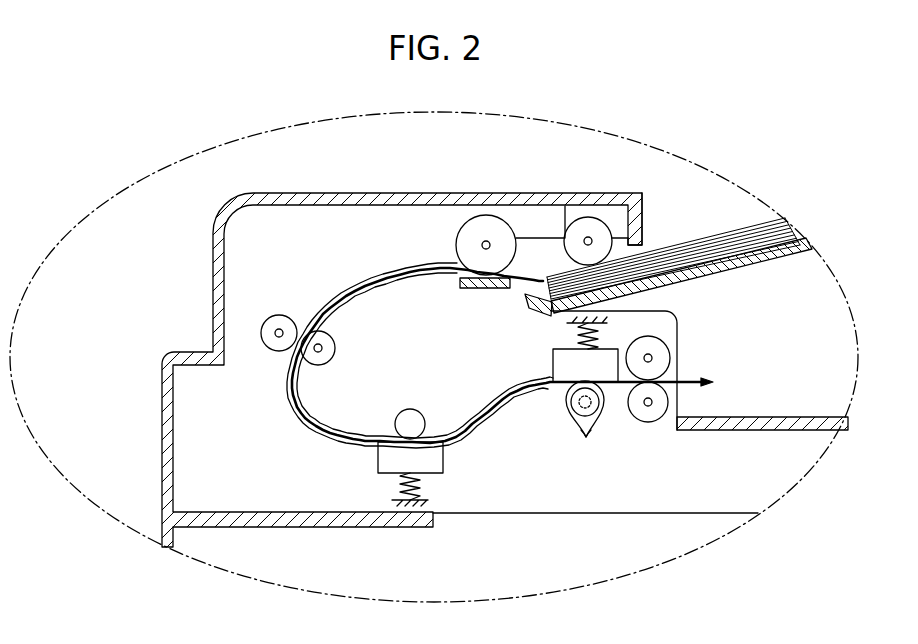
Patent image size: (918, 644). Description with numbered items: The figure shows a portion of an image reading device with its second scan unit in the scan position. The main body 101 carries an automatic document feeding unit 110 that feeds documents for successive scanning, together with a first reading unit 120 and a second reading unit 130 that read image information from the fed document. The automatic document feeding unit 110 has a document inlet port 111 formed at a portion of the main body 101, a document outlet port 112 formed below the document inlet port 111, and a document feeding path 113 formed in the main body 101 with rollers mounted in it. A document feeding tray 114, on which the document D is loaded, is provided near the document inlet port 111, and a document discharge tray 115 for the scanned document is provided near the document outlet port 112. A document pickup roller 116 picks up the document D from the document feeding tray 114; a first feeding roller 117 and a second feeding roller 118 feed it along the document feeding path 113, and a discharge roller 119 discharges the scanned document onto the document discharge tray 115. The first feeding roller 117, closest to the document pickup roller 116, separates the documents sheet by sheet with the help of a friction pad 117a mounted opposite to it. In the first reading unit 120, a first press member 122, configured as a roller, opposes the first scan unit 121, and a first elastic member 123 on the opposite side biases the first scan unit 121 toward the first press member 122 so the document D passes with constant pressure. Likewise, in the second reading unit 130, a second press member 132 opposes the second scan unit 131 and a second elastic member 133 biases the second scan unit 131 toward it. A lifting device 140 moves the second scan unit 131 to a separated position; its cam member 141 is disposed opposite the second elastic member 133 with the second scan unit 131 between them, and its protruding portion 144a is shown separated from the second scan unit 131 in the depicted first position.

The main body 101 is at (165, 415).
The automatic document feeding unit 110 is at (393, 248).
The document inlet port 111 is at (628, 251).
The document outlet port 112 is at (677, 389).
The document feeding path 113 is at (315, 421).
The document feeding tray 114 is at (763, 257).
The document discharge tray 115 is at (798, 416).
The document pickup roller 116 is at (588, 216).
The first feeding roller 117 is at (486, 214).
The friction pad 117a is at (473, 290).
The second feeding roller 118 is at (279, 316).
The discharge roller 119 is at (663, 350).
The first reading unit 120 is at (435, 437).
The first scan unit 121 is at (378, 459).
The first press member 122 is at (412, 410).
The first elastic member 123 is at (420, 486).
The second reading unit 130 is at (616, 335).
The second scan unit 131 is at (553, 364).
The second press member 132 is at (568, 403).
The second elastic member 133 is at (575, 337).
The lifting device 140 is at (612, 438).
The cam member 141 is at (595, 425).
The protruding portion 144a is at (586, 439).
The document D is at (740, 228).